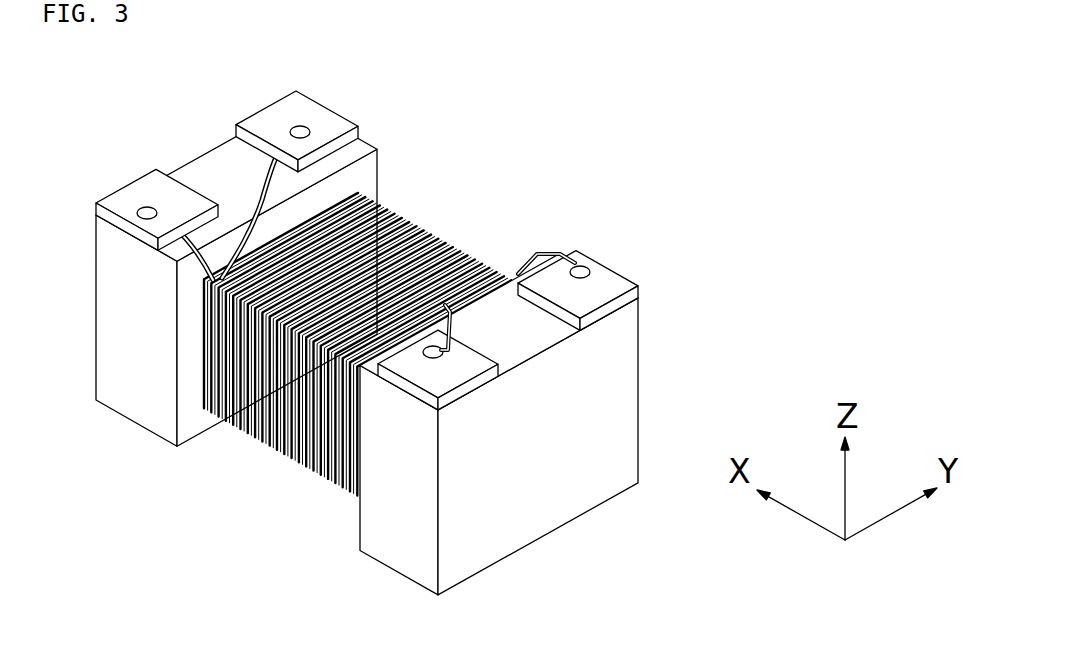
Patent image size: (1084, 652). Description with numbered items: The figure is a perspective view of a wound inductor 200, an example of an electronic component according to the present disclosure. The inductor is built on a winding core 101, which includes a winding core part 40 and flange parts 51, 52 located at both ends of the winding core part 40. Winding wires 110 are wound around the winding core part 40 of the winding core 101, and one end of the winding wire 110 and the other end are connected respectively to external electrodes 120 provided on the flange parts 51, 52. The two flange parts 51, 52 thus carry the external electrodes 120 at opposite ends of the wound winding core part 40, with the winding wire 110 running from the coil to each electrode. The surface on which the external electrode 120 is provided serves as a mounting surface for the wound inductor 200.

The wound inductor 200 is at (388, 342).
The winding core 101 is at (354, 375).
The flange part 51 is at (125, 385).
The flange part 52 is at (397, 540).
The winding wire 110 is at (273, 443).
The winding core part 40 is at (352, 200).
The external electrode 120 is at (330, 122).